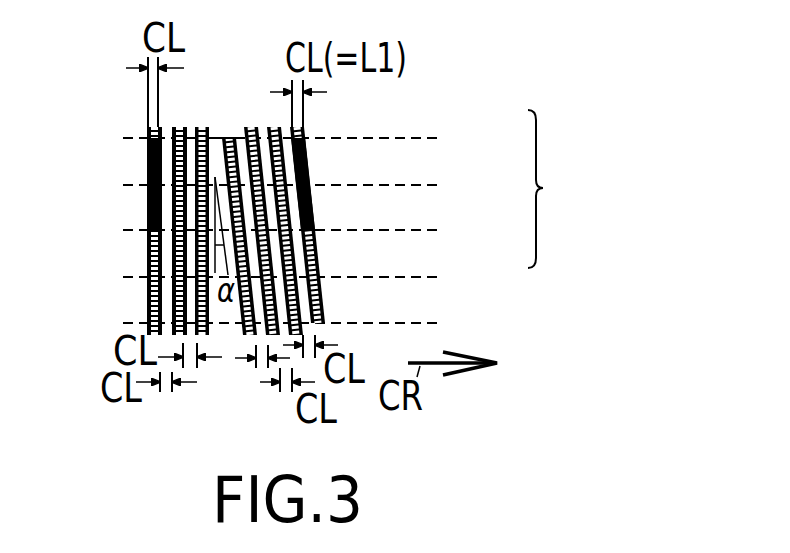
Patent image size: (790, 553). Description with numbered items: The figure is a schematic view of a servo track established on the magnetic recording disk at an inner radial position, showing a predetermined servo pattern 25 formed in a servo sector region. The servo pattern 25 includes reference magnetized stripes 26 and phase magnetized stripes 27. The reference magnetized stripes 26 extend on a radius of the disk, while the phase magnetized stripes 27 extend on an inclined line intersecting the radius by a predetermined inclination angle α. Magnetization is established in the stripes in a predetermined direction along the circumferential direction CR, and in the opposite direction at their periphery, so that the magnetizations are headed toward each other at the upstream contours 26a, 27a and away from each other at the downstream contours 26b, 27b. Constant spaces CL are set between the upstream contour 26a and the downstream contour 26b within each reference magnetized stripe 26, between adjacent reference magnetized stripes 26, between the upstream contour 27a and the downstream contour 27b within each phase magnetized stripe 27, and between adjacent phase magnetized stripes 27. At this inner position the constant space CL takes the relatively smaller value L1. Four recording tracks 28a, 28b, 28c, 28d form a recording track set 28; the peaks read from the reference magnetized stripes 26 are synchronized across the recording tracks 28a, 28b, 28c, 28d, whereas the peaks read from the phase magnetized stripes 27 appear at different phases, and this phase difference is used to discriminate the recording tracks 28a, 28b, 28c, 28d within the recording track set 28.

The servo pattern 25 is at (213, 138).
The reference magnetized stripes 26 is at (148, 130).
The upstream contour 26a is at (148, 148).
The downstream contour 26b is at (148, 197).
The phase magnetized stripes 27 is at (304, 145).
The upstream contour 27a is at (300, 175).
The downstream contour 27b is at (345, 209).
The recording track set 28 is at (560, 189).
The recording track 28a is at (417, 138).
The recording track 28b is at (417, 185).
The recording track 28c is at (417, 230).
The recording track 28d is at (417, 278).